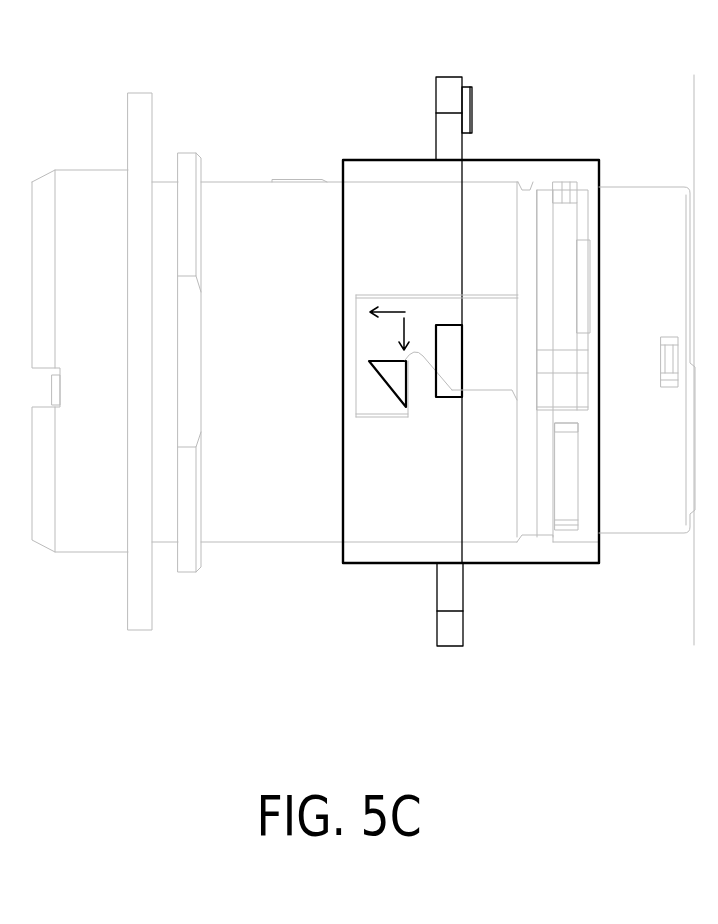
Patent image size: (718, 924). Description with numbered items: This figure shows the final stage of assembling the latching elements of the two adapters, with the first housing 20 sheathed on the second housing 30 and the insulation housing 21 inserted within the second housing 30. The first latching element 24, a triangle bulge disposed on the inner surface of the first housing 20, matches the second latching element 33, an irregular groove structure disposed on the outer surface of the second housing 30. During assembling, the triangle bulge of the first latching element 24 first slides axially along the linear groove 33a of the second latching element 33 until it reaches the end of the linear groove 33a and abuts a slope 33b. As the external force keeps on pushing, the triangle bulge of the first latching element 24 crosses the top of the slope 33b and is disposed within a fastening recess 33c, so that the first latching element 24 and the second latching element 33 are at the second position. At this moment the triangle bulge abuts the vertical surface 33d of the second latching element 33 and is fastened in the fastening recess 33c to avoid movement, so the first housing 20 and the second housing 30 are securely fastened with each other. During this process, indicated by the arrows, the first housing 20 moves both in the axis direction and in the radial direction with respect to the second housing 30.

The first housing 20 is at (373, 158).
The insulation housing 21 is at (530, 187).
The first latching element 24 is at (405, 358).
The second housing 30 is at (237, 182).
The second latching element 33 is at (567, 687).
The linear groove 33a is at (480, 390).
The slope 33b is at (443, 397).
The fastening recess 33c is at (382, 405).
The vertical surface 33d is at (408, 393).